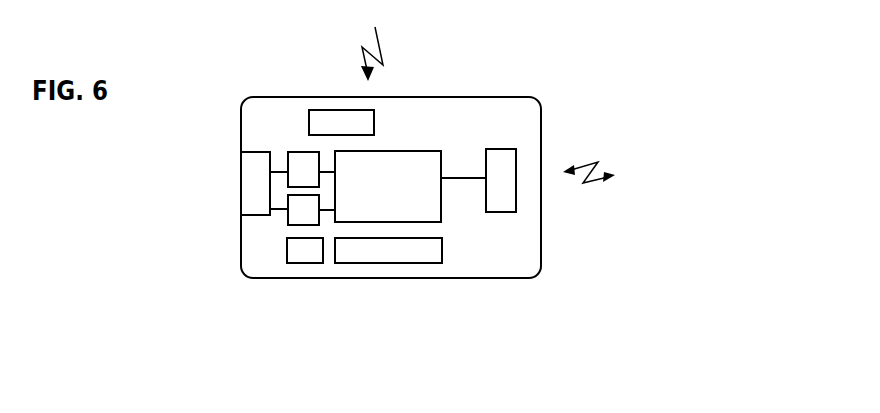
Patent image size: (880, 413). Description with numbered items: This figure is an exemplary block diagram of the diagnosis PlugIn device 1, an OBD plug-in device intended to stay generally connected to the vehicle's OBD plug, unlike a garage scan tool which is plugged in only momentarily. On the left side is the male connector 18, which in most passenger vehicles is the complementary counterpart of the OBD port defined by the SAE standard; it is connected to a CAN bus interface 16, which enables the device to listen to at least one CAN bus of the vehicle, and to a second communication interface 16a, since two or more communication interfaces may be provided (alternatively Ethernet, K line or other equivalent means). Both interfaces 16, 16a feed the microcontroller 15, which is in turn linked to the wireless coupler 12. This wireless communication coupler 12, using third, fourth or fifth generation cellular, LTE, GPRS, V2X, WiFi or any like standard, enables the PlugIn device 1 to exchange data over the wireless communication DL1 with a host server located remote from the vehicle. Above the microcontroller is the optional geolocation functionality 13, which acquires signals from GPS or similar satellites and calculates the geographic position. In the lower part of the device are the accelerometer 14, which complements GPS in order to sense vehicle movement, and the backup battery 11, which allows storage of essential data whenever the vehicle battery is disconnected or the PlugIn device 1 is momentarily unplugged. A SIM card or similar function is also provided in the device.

The PlugIn device 1 is at (563, 258).
The backup battery 11 is at (442, 249).
The wireless coupler 12 is at (507, 149).
The geolocation functionality 13 is at (322, 110).
The accelerometer 14 is at (287, 247).
The microcontroller 15 is at (425, 151).
The CAN bus interface 16 is at (305, 153).
The communication interface 16a is at (288, 222).
The male connector 18 is at (242, 167).
The wireless communication DL1 is at (618, 168).